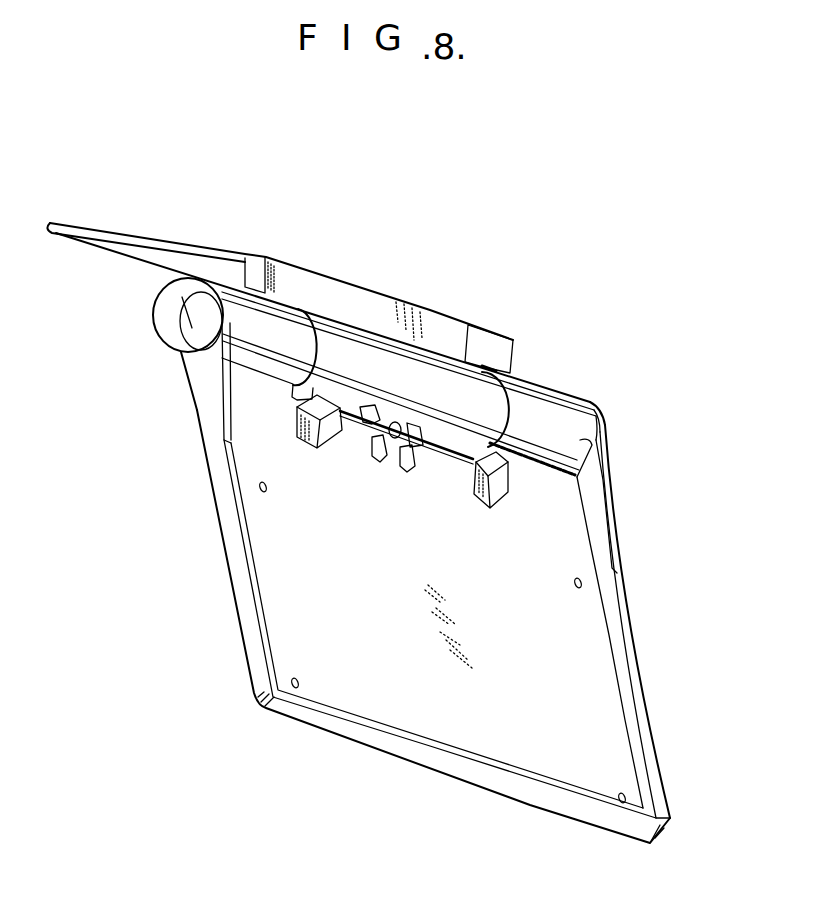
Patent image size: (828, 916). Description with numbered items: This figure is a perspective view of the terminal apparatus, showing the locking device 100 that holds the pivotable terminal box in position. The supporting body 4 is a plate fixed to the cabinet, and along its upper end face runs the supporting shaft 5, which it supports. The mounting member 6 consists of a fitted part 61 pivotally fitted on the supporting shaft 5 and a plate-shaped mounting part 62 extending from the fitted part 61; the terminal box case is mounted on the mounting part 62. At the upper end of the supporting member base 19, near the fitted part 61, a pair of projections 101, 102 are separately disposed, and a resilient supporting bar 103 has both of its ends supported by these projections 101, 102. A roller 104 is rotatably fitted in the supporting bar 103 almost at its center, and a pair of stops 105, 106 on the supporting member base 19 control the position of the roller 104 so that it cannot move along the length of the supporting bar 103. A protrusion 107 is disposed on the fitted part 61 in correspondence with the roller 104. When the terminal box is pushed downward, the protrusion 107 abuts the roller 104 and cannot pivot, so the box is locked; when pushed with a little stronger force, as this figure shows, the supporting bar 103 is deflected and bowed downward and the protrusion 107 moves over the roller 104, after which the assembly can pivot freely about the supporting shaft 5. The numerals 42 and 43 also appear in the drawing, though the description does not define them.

The supporting body 4 is at (230, 572).
The supporting shaft 5 is at (197, 325).
The mounting member 6 is at (507, 333).
The supporting member base 19 is at (587, 668).
The side arm 42 is at (228, 388).
The back wall 43 is at (547, 402).
The fitted part 61 is at (430, 403).
The mounting part 62 is at (192, 247).
The locking device 100 is at (425, 468).
The projection 101 is at (317, 452).
The projection 102 is at (508, 500).
The resilient supporting bar 103 is at (488, 430).
The roller 104 is at (492, 317).
The stop 105 is at (373, 455).
The stop 106 is at (403, 472).
The protrusion 107 is at (377, 410).